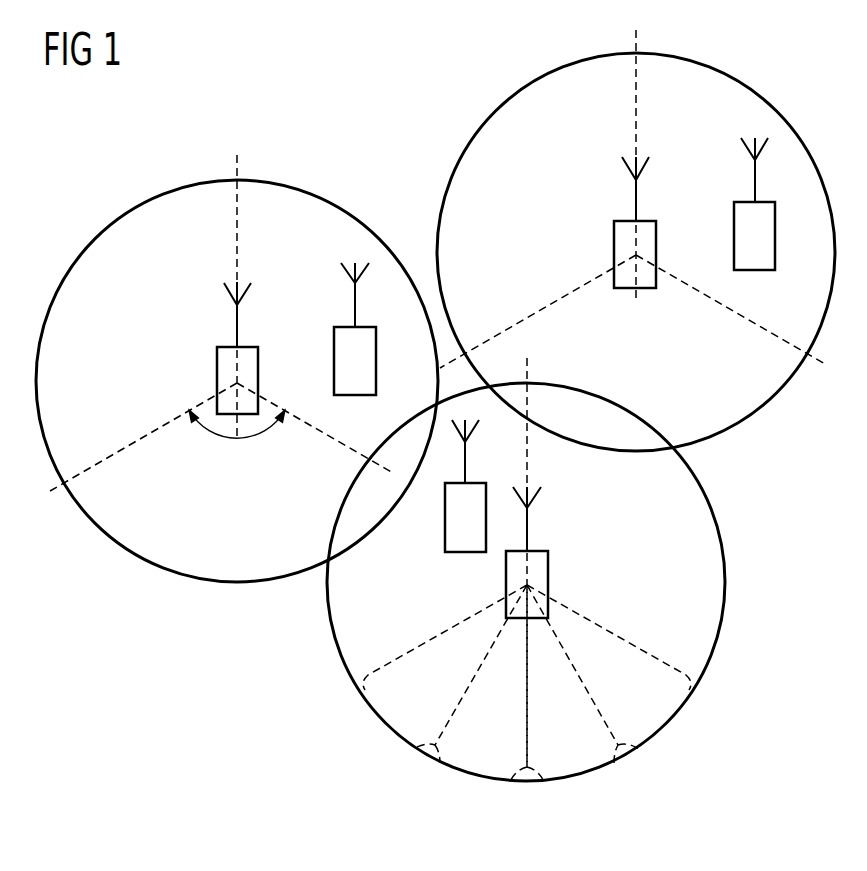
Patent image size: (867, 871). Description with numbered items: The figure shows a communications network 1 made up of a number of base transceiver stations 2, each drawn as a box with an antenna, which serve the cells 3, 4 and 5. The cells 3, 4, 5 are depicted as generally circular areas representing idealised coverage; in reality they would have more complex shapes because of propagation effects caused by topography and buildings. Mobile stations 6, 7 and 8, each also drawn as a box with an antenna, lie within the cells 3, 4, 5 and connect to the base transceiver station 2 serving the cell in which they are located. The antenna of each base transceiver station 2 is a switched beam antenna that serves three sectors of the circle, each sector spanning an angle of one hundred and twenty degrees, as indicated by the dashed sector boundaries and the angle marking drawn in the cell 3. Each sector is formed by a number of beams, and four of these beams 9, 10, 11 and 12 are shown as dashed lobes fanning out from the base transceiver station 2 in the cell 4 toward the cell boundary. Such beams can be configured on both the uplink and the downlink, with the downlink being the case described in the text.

The communications network 1 is at (191, 737).
The base transceiver station 2 is at (224, 347).
The cell 3 is at (237, 582).
The cell 4 is at (727, 583).
The cell 5 is at (497, 108).
The mobile station 6 is at (445, 519).
The mobile station 7 is at (334, 362).
The mobile station 8 is at (734, 238).
The beam 9 is at (388, 723).
The beam 10 is at (472, 773).
The beam 11 is at (580, 770).
The beam 12 is at (665, 722).